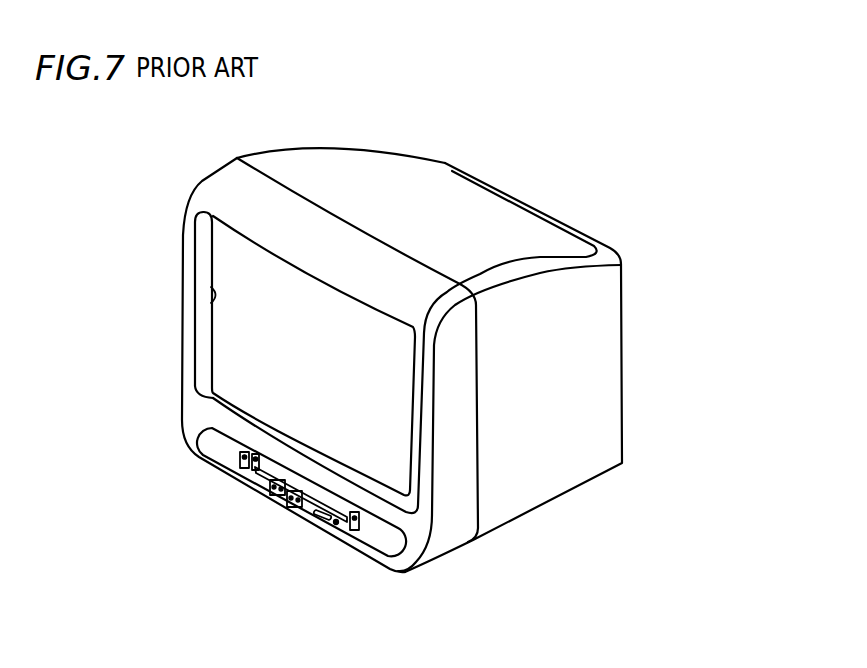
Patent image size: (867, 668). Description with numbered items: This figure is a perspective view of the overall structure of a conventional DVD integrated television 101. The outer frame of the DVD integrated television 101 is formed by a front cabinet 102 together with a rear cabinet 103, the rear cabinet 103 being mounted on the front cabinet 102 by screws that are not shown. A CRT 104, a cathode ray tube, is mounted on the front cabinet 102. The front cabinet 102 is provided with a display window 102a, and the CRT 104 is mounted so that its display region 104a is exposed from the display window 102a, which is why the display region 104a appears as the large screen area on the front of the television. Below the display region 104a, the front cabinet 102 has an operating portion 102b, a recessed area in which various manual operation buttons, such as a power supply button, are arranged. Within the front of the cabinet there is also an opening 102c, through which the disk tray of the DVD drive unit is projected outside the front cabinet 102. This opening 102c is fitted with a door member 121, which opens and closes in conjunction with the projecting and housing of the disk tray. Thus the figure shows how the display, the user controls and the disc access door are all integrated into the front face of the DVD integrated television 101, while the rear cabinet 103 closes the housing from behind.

The DVD integrated television 101 is at (187, 183).
The front cabinet 102 is at (240, 202).
The display window 102a is at (209, 297).
The operating portion 102b is at (223, 445).
The opening 102c is at (255, 464).
The rear cabinet 103 is at (481, 201).
The CRT 104 is at (253, 347).
The display region 104a is at (257, 387).
The door member 121 is at (297, 482).